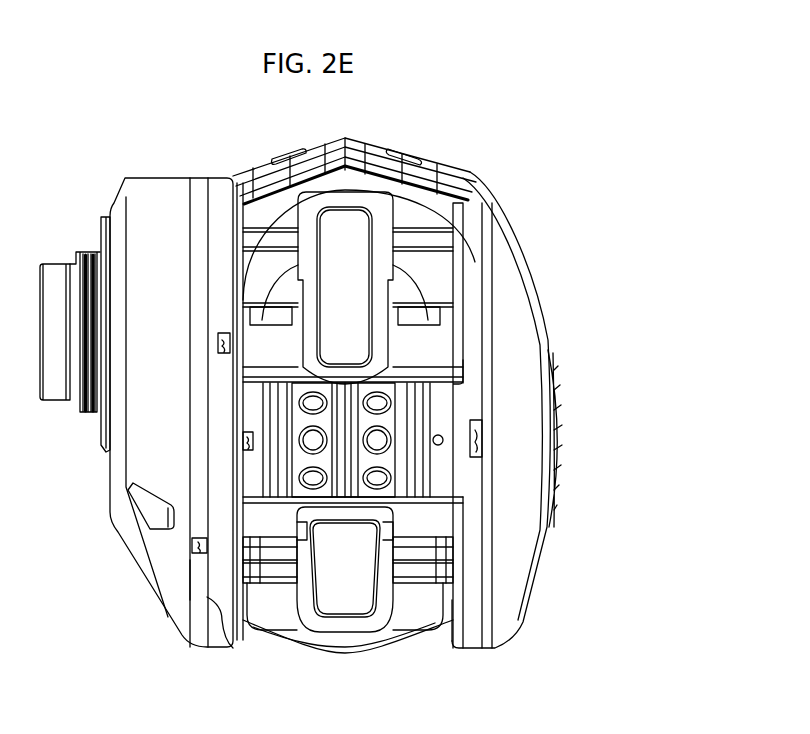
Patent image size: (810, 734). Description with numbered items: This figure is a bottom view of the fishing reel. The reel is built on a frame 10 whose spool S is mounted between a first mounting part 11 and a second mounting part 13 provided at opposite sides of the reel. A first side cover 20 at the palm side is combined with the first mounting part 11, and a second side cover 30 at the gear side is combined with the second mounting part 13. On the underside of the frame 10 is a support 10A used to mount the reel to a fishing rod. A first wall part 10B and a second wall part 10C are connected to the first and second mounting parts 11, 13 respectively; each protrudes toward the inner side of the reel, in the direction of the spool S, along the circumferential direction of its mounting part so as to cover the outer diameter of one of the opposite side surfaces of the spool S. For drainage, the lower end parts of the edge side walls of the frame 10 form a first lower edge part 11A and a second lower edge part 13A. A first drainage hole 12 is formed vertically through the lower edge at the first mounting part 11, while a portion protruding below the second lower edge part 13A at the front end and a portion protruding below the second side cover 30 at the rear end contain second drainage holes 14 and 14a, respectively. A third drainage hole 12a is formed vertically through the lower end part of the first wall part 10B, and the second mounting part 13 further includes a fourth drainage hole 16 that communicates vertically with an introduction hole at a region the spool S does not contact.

The frame 10 is at (409, 314).
The support 10A is at (378, 243).
The first wall part 10B is at (440, 474).
The second wall part 10C is at (193, 545).
The first mounting part 11 is at (480, 580).
The first lower edge part 11A is at (470, 393).
The first drainage hole 12 is at (483, 437).
The third drainage hole 12a is at (442, 436).
The second mounting part 13 is at (233, 647).
The second lower edge part 13A is at (216, 381).
The second drainage hole 14 is at (222, 345).
The second drainage hole 14a is at (187, 566).
The fourth drainage hole 16 is at (246, 441).
The first side cover 20 is at (518, 547).
The second side cover 30 is at (185, 588).
The spool S is at (320, 465).